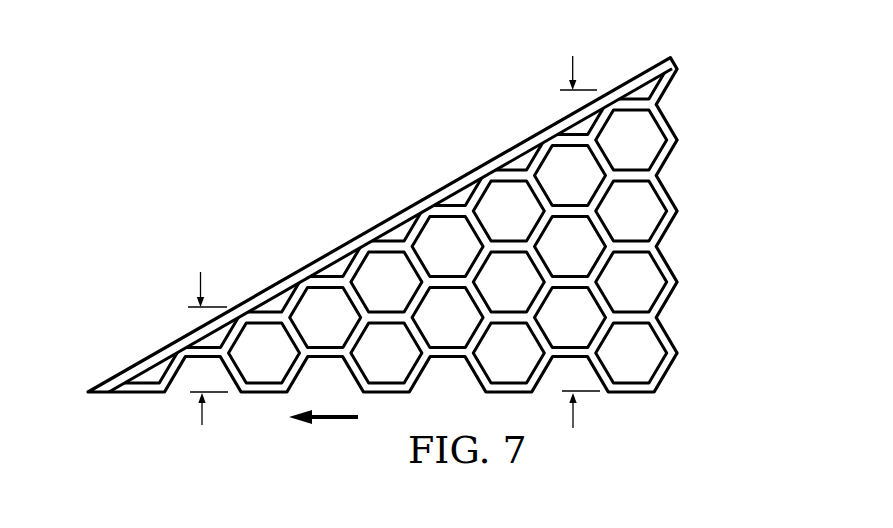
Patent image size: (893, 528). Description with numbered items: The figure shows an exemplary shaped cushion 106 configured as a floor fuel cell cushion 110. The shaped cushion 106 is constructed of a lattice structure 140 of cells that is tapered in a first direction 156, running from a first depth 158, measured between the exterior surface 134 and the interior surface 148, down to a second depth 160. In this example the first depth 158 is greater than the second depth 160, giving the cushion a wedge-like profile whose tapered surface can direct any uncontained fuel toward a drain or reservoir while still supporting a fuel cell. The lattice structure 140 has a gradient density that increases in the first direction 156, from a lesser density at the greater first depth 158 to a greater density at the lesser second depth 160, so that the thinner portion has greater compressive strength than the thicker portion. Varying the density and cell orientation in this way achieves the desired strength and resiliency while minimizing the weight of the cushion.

The shaped cushion 106 is at (303, 96).
The floor fuel cell cushion 110 is at (423, 247).
The exterior surface 134 is at (379, 224).
The lattice structure 140 is at (676, 236).
The interior surface 148 is at (628, 395).
The first direction 156 is at (334, 422).
The first depth 158 is at (573, 58).
The second depth 160 is at (200, 275).